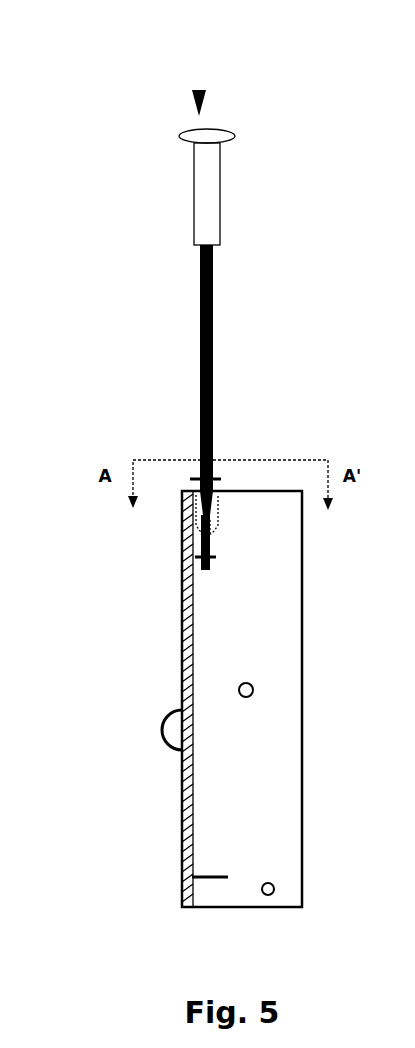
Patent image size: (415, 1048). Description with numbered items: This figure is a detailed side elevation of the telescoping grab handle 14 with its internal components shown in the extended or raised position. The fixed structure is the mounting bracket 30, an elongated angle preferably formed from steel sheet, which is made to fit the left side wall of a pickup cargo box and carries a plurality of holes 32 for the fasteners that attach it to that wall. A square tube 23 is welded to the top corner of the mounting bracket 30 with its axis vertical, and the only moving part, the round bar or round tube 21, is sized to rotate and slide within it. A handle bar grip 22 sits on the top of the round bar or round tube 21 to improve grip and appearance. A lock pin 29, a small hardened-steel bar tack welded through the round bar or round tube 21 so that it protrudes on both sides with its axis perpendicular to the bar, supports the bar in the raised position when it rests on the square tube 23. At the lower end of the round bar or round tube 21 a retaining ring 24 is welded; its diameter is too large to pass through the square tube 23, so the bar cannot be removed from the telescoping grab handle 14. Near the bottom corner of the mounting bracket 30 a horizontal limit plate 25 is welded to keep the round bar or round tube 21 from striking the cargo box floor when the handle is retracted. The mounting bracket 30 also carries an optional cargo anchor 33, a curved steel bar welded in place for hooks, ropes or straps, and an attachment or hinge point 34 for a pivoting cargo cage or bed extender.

The telescoping grab handle 14 is at (200, 92).
The handle bar grip 22 is at (194, 222).
The round bar or round tube 21 is at (200, 358).
The lock pin 29 is at (190, 478).
The mounting bracket 30 is at (182, 618).
The square tube 23 is at (220, 517).
The retaining ring 24 is at (217, 558).
The cargo anchor 33 is at (153, 712).
The attachment or hinge point 34 is at (250, 696).
The holes 32 is at (268, 882).
The limit plate 25 is at (212, 870).